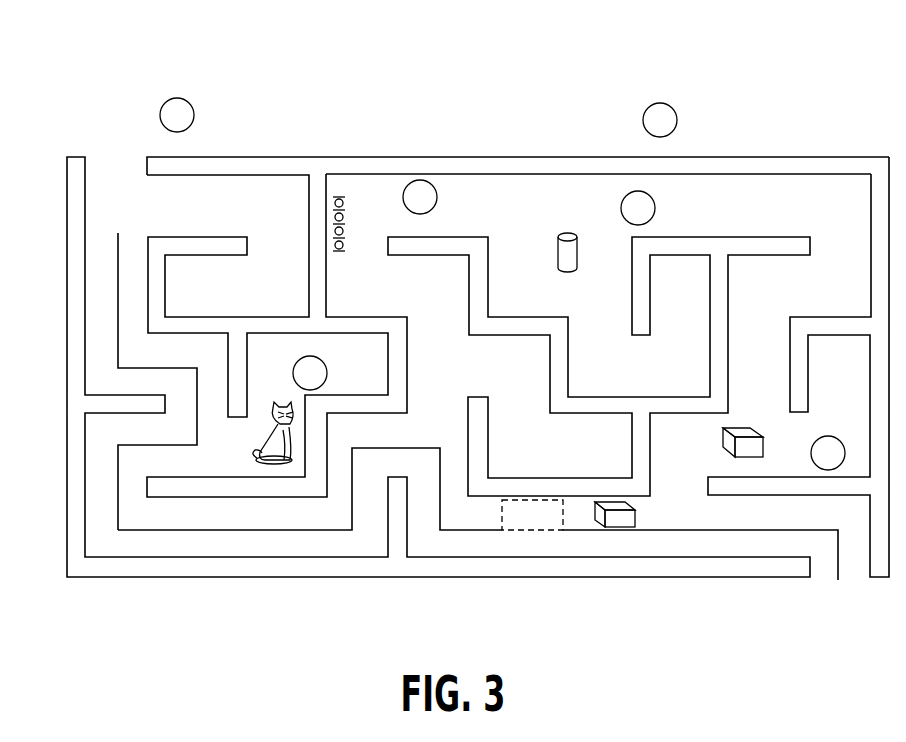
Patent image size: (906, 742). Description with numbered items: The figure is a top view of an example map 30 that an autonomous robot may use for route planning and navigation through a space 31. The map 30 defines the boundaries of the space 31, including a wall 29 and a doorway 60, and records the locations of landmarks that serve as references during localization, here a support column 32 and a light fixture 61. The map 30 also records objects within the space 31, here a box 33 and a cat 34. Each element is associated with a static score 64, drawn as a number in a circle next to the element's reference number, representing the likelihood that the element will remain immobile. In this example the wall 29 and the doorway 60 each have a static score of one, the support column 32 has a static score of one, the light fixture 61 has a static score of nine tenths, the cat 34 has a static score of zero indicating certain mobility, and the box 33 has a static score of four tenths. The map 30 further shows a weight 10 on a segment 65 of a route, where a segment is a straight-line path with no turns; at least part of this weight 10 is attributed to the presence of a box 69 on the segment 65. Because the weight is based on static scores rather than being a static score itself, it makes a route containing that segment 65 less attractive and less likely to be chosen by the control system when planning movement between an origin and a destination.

The map 30 is at (377, 118).
The wall 29 is at (602, 156).
The space 31 is at (817, 205).
The doorway 60 is at (119, 147).
The segment 65 is at (290, 530).
The target location 10 is at (532, 515).
The static score 64 is at (193, 105).
The light fixture 61 is at (347, 220).
The support column 32 is at (578, 240).
The cat 34 is at (280, 406).
The box 33 is at (763, 447).
The box 69 is at (637, 517).